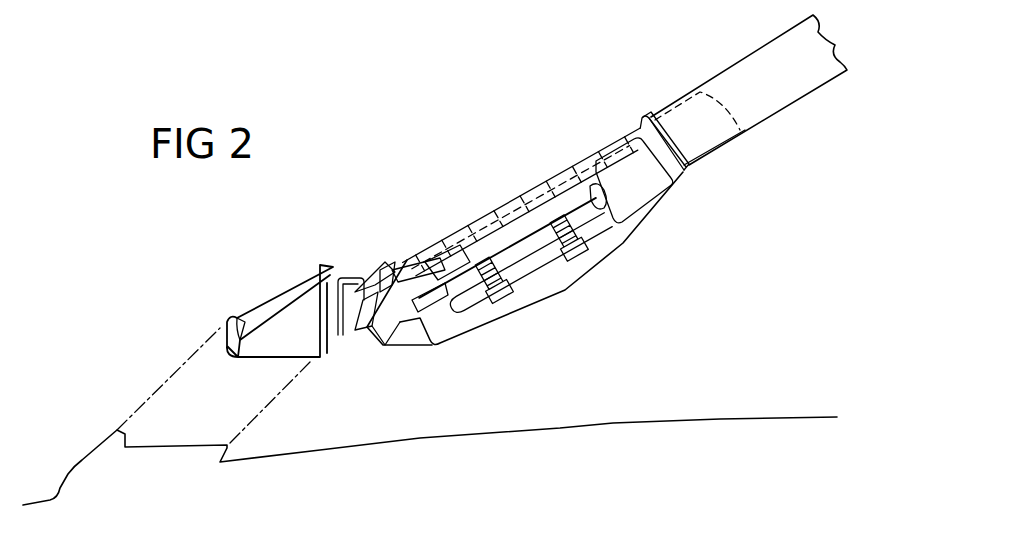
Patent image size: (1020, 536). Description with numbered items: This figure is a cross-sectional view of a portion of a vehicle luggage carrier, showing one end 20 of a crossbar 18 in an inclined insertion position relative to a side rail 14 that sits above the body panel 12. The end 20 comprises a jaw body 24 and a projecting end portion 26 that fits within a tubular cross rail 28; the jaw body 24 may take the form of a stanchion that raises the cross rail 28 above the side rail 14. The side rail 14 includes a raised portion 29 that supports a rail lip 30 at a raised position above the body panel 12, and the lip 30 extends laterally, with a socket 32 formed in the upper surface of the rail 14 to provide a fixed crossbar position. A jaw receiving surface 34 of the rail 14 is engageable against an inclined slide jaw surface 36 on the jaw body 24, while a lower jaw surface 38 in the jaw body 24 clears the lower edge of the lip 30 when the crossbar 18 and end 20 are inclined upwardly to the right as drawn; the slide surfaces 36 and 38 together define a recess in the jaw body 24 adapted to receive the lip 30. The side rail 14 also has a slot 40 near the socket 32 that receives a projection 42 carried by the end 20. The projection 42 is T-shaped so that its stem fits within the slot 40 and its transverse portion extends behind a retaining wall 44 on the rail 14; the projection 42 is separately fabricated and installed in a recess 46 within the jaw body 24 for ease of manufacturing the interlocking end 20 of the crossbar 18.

The body panel 12 is at (613, 423).
The side rail 14 is at (227, 311).
The crossbar 18 is at (516, 145).
The end 20 is at (496, 193).
The jaw body 24 is at (575, 163).
The projecting end portion 26 is at (720, 160).
The tubular cross rail 28 is at (712, 82).
The raised portion 29 is at (227, 320).
The rail lip 30 is at (367, 267).
The socket 32 is at (383, 270).
The jaw receiving surface 34 is at (398, 267).
The inclined slide jaw surface 36 is at (440, 270).
The lower jaw surface 38 is at (418, 330).
The slot 40 is at (360, 340).
The projection 42 is at (383, 340).
The retaining wall 44 is at (345, 340).
The recess 46 is at (623, 243).